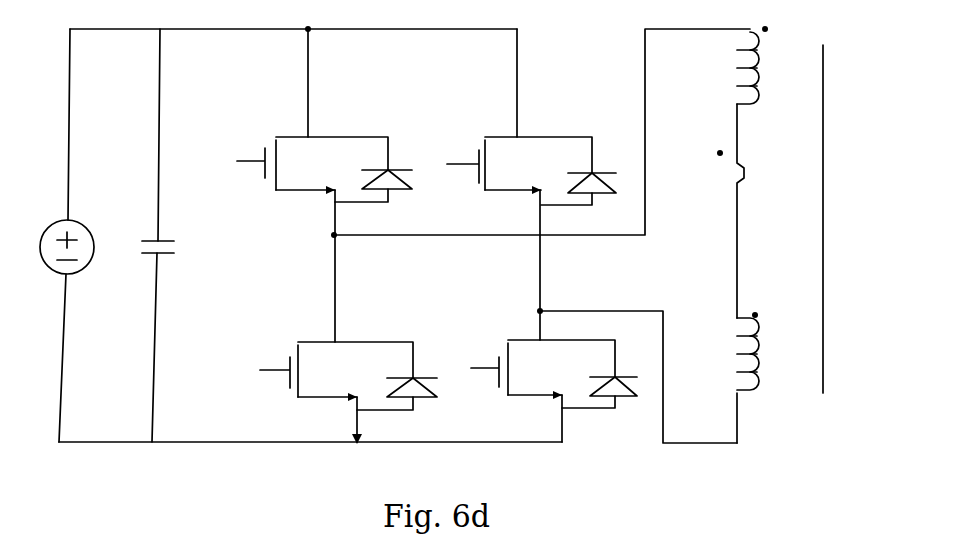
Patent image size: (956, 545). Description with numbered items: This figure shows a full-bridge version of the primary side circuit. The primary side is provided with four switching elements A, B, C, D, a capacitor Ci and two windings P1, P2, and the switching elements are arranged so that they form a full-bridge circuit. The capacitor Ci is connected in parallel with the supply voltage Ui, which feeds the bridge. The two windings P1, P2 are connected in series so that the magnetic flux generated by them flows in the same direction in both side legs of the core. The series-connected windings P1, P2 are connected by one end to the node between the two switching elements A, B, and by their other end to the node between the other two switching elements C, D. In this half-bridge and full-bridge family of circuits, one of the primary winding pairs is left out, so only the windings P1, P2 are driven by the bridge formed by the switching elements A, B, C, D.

The switching element A is at (278, 138).
The switching element B is at (300, 342).
The switching element C is at (492, 136).
The switching element D is at (511, 340).
The supply voltage Ui is at (55, 221).
The capacitor Ci is at (171, 250).
The winding P1 is at (804, 85).
The winding P2 is at (762, 386).